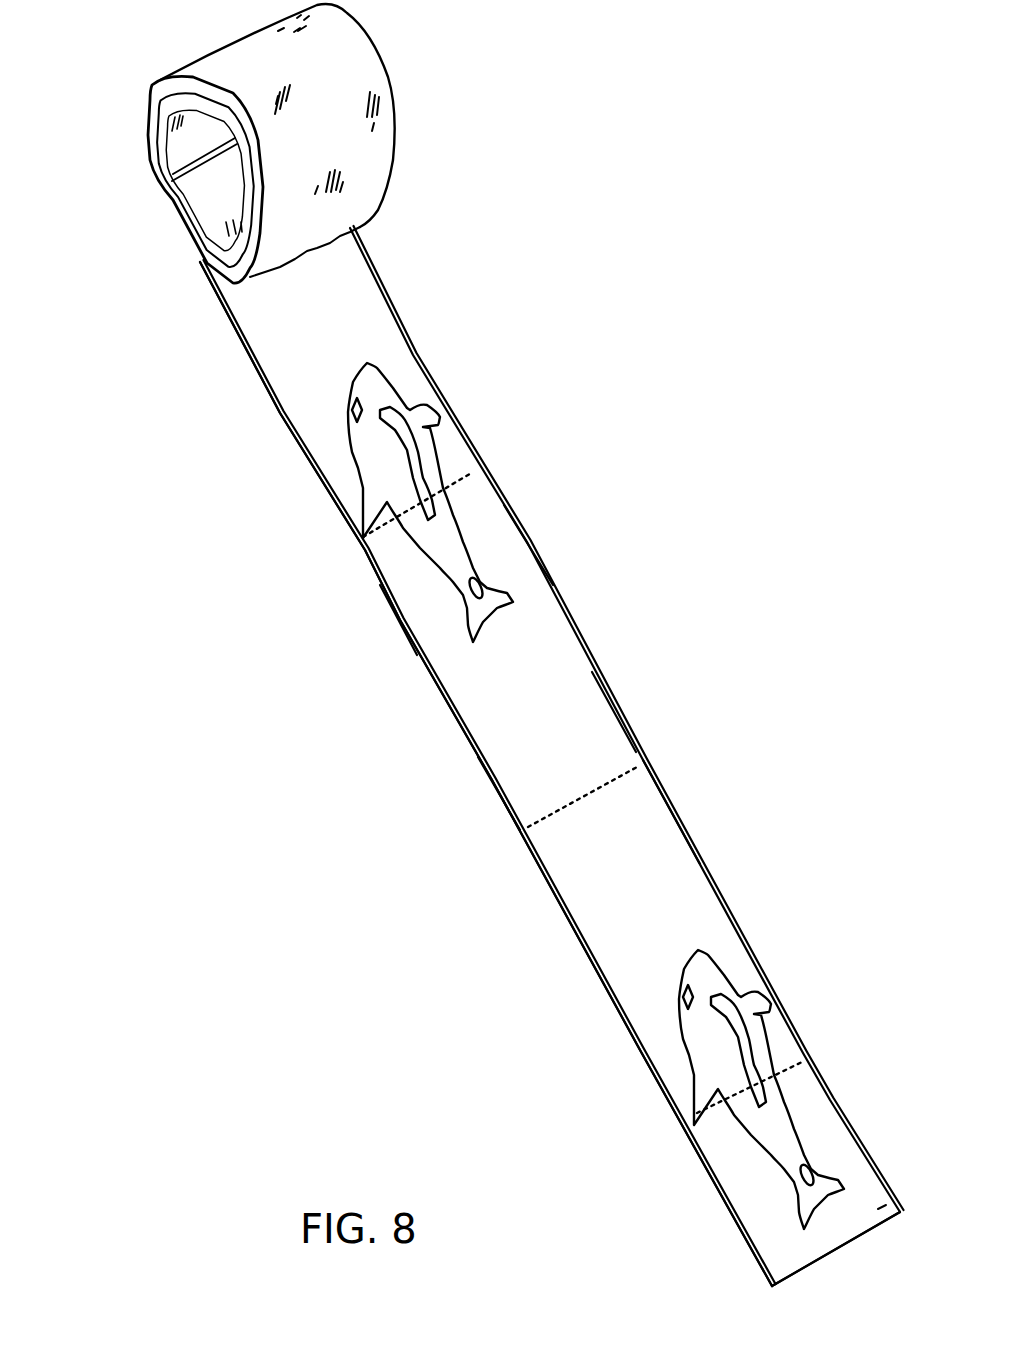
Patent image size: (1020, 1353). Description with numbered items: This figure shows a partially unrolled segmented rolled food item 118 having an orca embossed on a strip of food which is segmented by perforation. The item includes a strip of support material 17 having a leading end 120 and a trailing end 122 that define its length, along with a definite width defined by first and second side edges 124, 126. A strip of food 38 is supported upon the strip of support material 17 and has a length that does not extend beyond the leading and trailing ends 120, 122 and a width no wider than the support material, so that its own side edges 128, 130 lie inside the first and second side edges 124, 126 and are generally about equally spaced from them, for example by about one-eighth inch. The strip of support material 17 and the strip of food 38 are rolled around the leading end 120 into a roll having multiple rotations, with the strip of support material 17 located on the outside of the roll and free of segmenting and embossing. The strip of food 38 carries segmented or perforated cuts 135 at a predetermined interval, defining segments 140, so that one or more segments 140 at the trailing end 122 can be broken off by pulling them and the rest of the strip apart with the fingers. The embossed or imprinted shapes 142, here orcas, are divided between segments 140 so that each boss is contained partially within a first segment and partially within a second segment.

The strip of support material 17 is at (660, 780).
The strip of food 38 is at (567, 668).
The rolled food item 118 is at (407, 64).
The leading end 120 is at (194, 168).
The trailing end 122 is at (835, 1255).
The first side edge 124 is at (497, 798).
The second side edge 126 is at (613, 695).
The side edge of the strip of food 128 is at (397, 615).
The side edge of the strip of food 130 is at (520, 533).
The perforated cuts 135 is at (457, 488).
The segments 140 is at (300, 397).
The embossed or imprinted shapes 142 is at (393, 375).